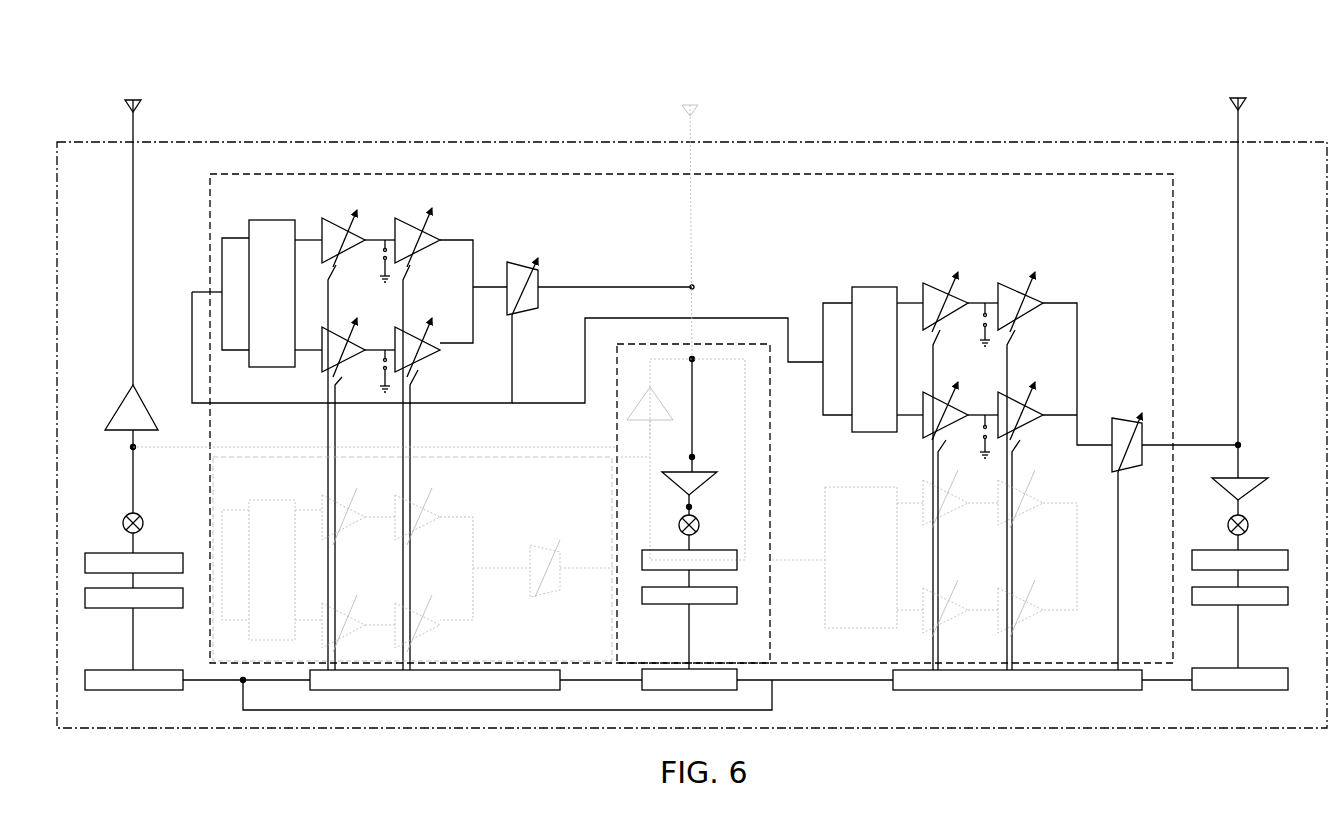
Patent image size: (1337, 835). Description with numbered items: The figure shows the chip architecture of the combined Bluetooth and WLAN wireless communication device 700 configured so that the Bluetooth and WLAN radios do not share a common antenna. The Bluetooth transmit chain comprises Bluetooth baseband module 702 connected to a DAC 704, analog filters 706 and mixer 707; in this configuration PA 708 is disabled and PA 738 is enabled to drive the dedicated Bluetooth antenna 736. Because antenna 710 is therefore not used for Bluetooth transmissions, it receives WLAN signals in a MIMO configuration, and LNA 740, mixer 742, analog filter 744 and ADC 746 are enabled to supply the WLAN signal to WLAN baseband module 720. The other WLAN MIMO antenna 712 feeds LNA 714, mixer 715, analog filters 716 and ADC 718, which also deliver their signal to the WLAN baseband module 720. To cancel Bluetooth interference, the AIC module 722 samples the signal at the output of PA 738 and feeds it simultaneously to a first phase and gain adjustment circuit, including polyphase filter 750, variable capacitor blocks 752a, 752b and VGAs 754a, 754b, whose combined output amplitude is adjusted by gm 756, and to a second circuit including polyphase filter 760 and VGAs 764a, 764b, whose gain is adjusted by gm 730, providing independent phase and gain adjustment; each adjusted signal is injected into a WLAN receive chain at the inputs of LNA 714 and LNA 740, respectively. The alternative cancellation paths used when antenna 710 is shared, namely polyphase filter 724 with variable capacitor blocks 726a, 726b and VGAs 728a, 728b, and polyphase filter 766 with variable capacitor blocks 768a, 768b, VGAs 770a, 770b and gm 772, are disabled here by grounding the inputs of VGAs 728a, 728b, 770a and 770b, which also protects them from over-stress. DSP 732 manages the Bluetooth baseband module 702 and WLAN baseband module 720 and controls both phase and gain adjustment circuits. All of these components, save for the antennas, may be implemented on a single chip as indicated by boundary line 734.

The wireless communication device 700 is at (896, 50).
The Bluetooth baseband module 702 is at (150, 690).
The DAC 704 is at (150, 608).
The analog filters 706 is at (143, 552).
The mixer 707 is at (145, 515).
The PA 708 is at (678, 388).
The WLAN MIMO antenna 710 is at (697, 113).
The WLAN MIMO antenna 712 is at (1248, 101).
The LNA 714 is at (1250, 477).
The mixer 715 is at (1232, 518).
The analog filters 716 is at (1267, 548).
The ADC 718 is at (1253, 605).
The WLAN baseband module 720 is at (677, 669).
The AIC module 722 is at (770, 174).
The polyphase filter 724 is at (855, 620).
The variable capacitor block 726a is at (943, 322).
The variable capacitor block 726b is at (923, 422).
The VGA 728a is at (1033, 508).
The VGA 728b is at (1032, 618).
The gm 730 is at (1135, 468).
The DSP 732 is at (563, 690).
The boundary line 734 is at (810, 141).
The dedicated Bluetooth antenna 736 is at (143, 103).
The PA 738 is at (113, 431).
The LNA 740 is at (703, 470).
The mixer 742 is at (717, 517).
The analog filter 744 is at (668, 550).
The ADC 746 is at (668, 604).
The polyphase filter 750 is at (268, 367).
The variable capacitor block 752a is at (347, 252).
The variable capacitor block 752b is at (345, 362).
The VGA 754a is at (420, 231).
The VGA 754b is at (425, 360).
The gm 756 is at (542, 262).
The polyphase filter 760 is at (852, 426).
The VGA 764a is at (1018, 297).
The VGA 764b is at (1020, 423).
The polyphase filter 766 is at (260, 636).
The variable capacitor block 768a is at (353, 518).
The variable capacitor block 768b is at (320, 632).
The VGA 770a is at (430, 507).
The VGA 770b is at (428, 622).
The gm 772 is at (548, 598).